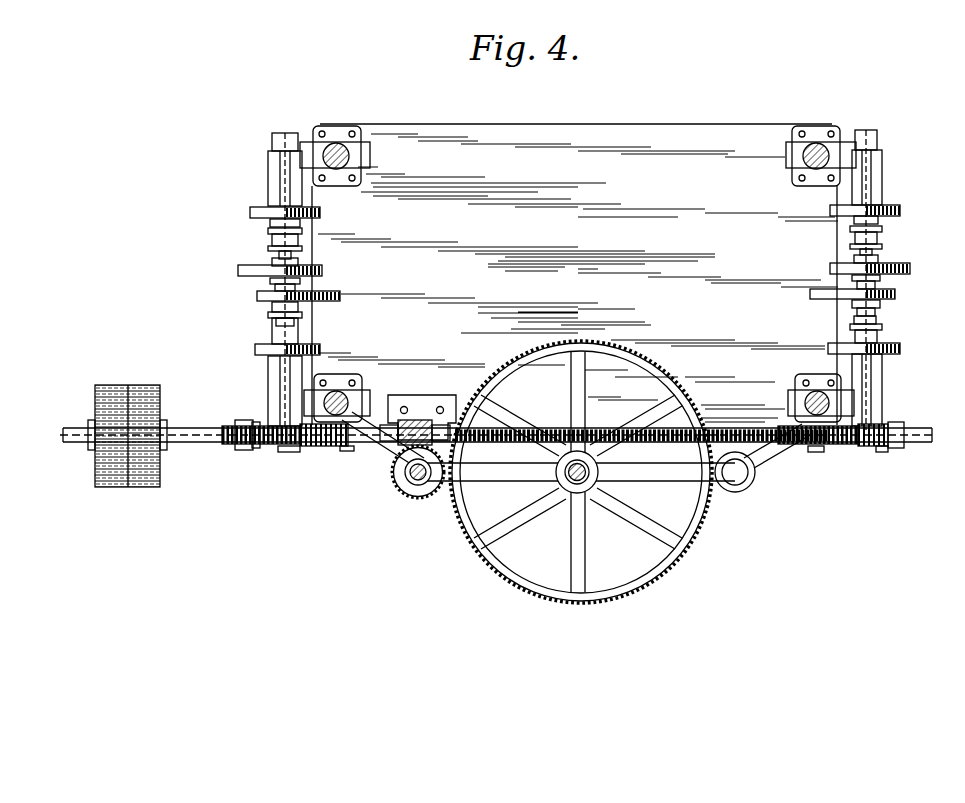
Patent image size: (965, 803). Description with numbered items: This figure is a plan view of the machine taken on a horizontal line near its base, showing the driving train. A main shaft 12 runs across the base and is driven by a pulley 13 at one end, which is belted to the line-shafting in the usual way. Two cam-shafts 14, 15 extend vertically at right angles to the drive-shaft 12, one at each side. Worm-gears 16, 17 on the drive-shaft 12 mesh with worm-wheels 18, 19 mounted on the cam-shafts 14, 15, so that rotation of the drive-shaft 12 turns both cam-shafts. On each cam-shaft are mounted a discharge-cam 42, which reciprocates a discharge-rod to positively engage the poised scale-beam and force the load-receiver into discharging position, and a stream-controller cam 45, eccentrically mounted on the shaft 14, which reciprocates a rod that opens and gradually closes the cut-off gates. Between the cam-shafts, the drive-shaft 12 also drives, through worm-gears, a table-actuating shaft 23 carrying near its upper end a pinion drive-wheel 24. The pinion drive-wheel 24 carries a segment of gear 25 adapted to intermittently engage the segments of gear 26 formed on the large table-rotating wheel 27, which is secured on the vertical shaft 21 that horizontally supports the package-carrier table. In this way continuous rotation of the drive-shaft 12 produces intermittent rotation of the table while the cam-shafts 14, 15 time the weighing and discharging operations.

The main shaft 12 is at (186, 428).
The pulley 13 is at (121, 387).
The cam-shaft 14 is at (876, 320).
The cam-shaft 15 is at (272, 322).
The worm-gear 16 is at (858, 448).
The worm-gear 17 is at (290, 448).
The worm-wheel 18 is at (232, 446).
The worm-wheel 19 is at (812, 448).
The vertical shaft 21 is at (582, 480).
The table-actuating shaft 23 is at (412, 485).
The pinion drive-wheel 24 is at (398, 480).
The segment of gear 25 is at (416, 500).
The segments of gear 26 is at (462, 541).
The table-rotating wheel 27 is at (525, 508).
The discharge-cam 42 is at (268, 218).
The stream-controller cam 45 is at (256, 276).